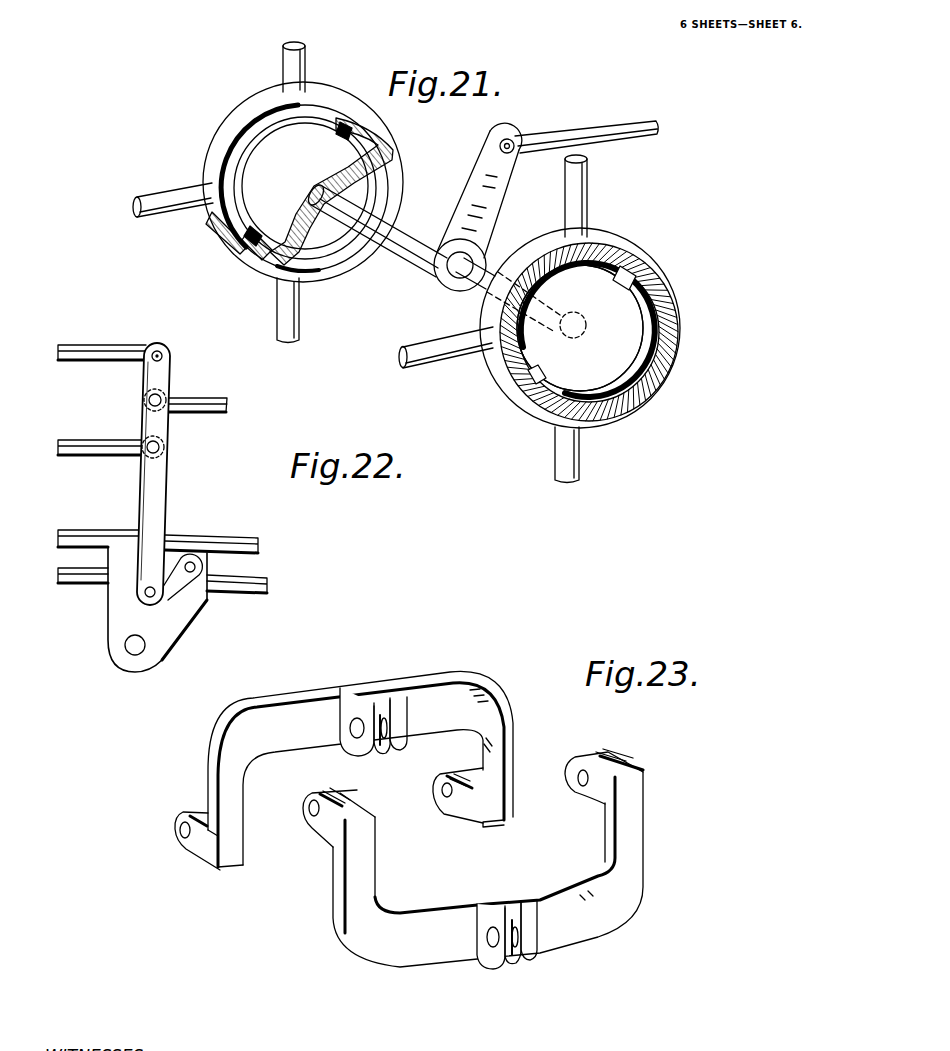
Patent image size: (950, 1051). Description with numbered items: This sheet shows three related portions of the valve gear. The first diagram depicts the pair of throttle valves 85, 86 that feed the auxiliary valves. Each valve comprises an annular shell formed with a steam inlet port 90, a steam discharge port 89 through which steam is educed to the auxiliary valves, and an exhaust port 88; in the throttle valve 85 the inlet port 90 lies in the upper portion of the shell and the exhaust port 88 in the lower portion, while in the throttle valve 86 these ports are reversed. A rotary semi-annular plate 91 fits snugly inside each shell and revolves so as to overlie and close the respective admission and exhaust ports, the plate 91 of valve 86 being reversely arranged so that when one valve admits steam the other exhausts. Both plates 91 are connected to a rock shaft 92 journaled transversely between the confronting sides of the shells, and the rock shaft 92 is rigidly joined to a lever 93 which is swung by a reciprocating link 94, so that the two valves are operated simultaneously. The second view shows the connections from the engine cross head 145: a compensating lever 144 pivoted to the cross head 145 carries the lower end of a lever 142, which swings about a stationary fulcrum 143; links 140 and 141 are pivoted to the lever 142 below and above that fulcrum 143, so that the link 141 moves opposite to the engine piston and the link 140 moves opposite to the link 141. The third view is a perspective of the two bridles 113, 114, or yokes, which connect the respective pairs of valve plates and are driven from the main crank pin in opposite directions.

In FIG. 21, the throttle valve 85 is at (228, 112).
In FIG. 21, the throttle valve 86 is at (657, 272).
In FIG. 21, the exhaust port 88 is at (300, 302).
In FIG. 21, the steam discharge port 89 is at (186, 216).
In FIG. 21, the steam inlet port 90 is at (306, 66).
In FIG. 21, the rotary semi-annular plate 91 is at (372, 164).
In FIG. 21, the rock shaft 92 is at (416, 226).
In FIG. 21, the lever 93 is at (490, 200).
In FIG. 21, the reciprocating link 94 is at (581, 132).
In FIG. 23, the bridle 113 is at (295, 705).
In FIG. 23, the bridle 114 is at (597, 931).
In FIG. 22, the link 140 is at (97, 447).
In FIG. 22, the link 141 is at (116, 364).
In FIG. 22, the lever 142 is at (172, 489).
In FIG. 22, the stationary fulcrum 143 is at (158, 404).
In FIG. 22, the compensating lever 144 is at (196, 590).
In FIG. 22, the cross head 145 is at (178, 620).